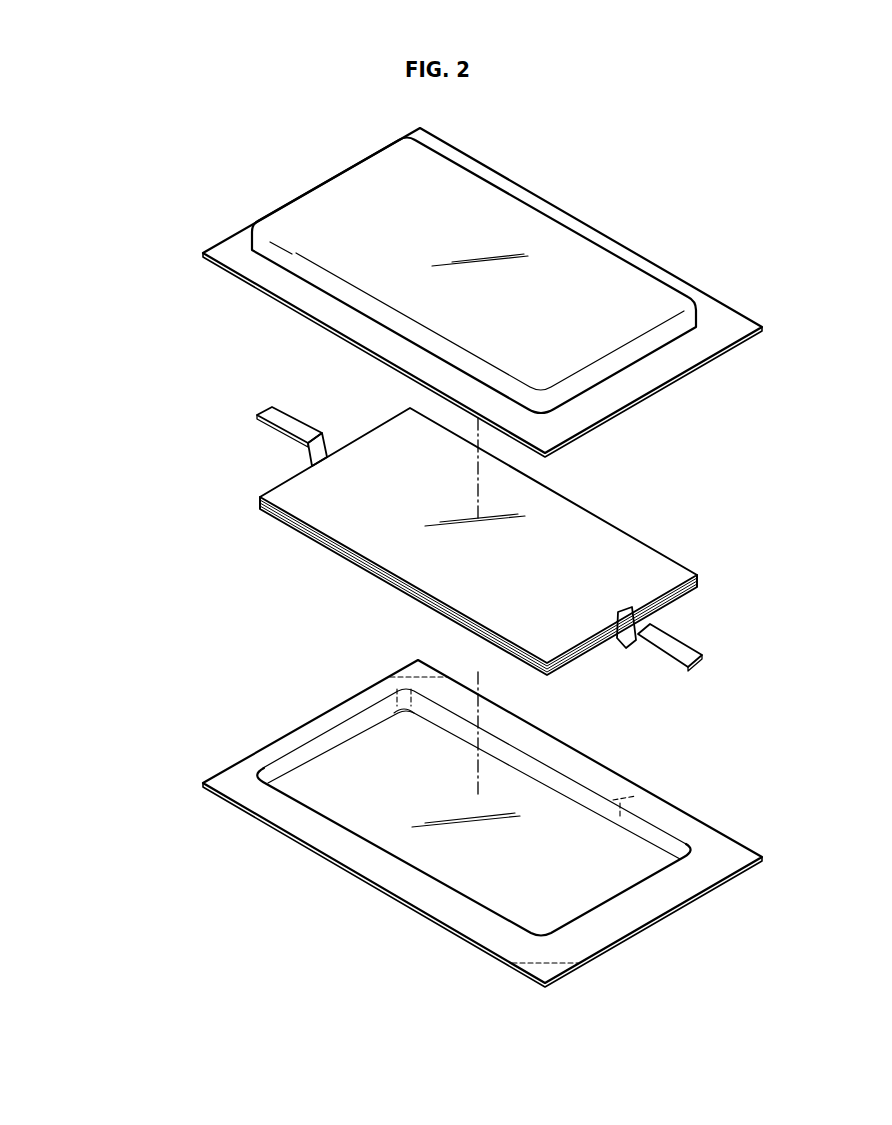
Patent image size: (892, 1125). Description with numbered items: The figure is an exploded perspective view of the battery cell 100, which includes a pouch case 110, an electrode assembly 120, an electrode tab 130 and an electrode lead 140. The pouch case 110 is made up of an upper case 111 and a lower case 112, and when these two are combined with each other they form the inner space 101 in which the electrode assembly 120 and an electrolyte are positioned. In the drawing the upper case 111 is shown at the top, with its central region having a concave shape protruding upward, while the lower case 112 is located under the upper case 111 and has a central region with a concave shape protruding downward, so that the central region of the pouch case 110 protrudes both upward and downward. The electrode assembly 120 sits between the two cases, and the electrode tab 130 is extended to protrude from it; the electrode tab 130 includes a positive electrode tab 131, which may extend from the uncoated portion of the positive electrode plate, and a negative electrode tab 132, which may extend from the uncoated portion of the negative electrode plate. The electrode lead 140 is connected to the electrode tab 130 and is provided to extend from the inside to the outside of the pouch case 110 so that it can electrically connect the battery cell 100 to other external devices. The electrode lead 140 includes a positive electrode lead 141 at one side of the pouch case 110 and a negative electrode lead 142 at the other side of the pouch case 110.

The battery cell 100 is at (288, 139).
The inner space 101 is at (568, 823).
The pouch case 110 is at (148, 453).
The upper case 111 is at (261, 278).
The lower case 112 is at (226, 784).
The electrode assembly 120 is at (620, 516).
The electrode tab 130 is at (663, 620).
The positive electrode tab 131 is at (616, 643).
The negative electrode tab 132 is at (322, 448).
The electrode lead 140 is at (711, 645).
The positive electrode lead 141 is at (698, 657).
The negative electrode lead 142 is at (287, 422).